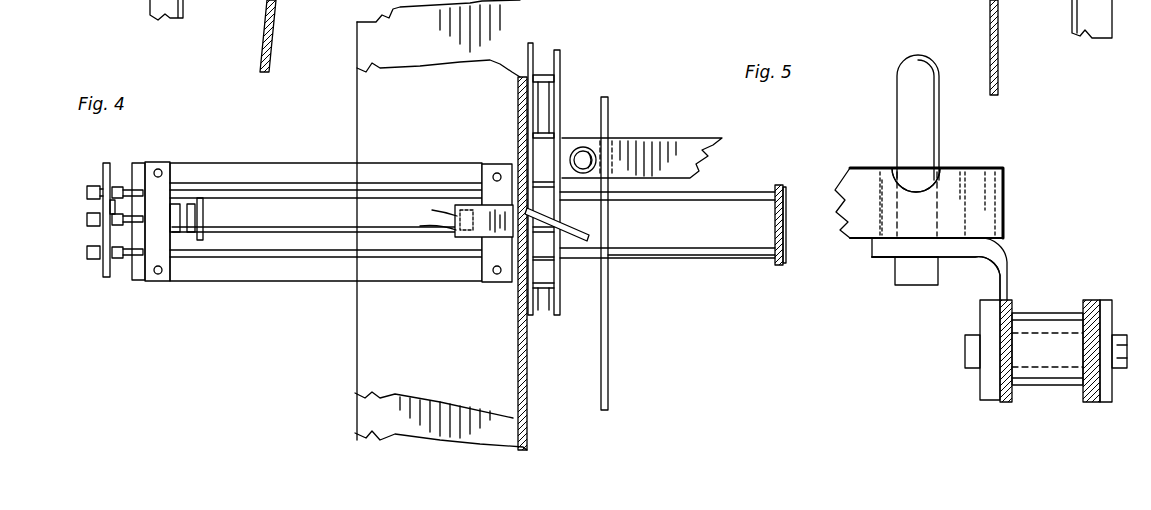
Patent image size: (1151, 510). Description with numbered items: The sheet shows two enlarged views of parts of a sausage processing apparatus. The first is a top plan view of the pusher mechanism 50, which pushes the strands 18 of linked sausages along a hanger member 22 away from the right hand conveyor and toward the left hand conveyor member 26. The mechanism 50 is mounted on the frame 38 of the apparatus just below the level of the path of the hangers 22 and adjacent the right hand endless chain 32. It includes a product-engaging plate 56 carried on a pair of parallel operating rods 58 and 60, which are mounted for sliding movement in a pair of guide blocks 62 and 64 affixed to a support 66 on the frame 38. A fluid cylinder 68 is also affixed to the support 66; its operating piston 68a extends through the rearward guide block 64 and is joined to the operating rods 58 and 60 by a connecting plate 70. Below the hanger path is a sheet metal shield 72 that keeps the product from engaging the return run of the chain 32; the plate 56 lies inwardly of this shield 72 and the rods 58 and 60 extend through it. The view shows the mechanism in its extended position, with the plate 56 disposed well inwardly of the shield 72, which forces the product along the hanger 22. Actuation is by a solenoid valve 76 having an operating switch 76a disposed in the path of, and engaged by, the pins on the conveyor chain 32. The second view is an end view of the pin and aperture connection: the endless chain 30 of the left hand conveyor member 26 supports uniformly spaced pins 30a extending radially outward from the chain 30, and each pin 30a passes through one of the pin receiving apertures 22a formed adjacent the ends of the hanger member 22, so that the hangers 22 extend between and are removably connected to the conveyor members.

In FIG. 4, the strands 18 is at (558, 46).
In FIG. 4, the hanger members 22 is at (688, 140).
In FIG. 5, the hanger members 22 is at (994, 203).
In FIG. 5, the pin receiving apertures 22a is at (892, 167).
In FIG. 5, the left hand conveyor member 26 is at (1104, 305).
In FIG. 5, the endless chain 30 is at (982, 0).
In FIG. 4, the pins 30a is at (583, 146).
In FIG. 5, the pins 30a is at (934, 128).
In FIG. 4, the endless chain 32 is at (280, 2).
In FIG. 4, the frame 38 is at (516, 346).
In FIG. 4, the pusher mechanism 50 is at (122, 160).
In FIG. 4, the product-engaging plate 56 is at (787, 258).
In FIG. 4, the operating rod 58 is at (724, 192).
In FIG. 4, the operating rod 60 is at (700, 255).
In FIG. 4, the guide block 62 is at (500, 163).
In FIG. 4, the rearward guide block 64 is at (160, 183).
In FIG. 4, the support 66 is at (298, 272).
In FIG. 4, the fluid cylinder 68 is at (243, 228).
In FIG. 4, the operating piston 68a is at (124, 247).
In FIG. 4, the connecting plate 70 is at (104, 272).
In FIG. 4, the sheet metal shield 72 is at (610, 110).
In FIG. 4, the solenoid valve 76 is at (470, 205).
In FIG. 4, the operating switch 76a is at (596, 226).